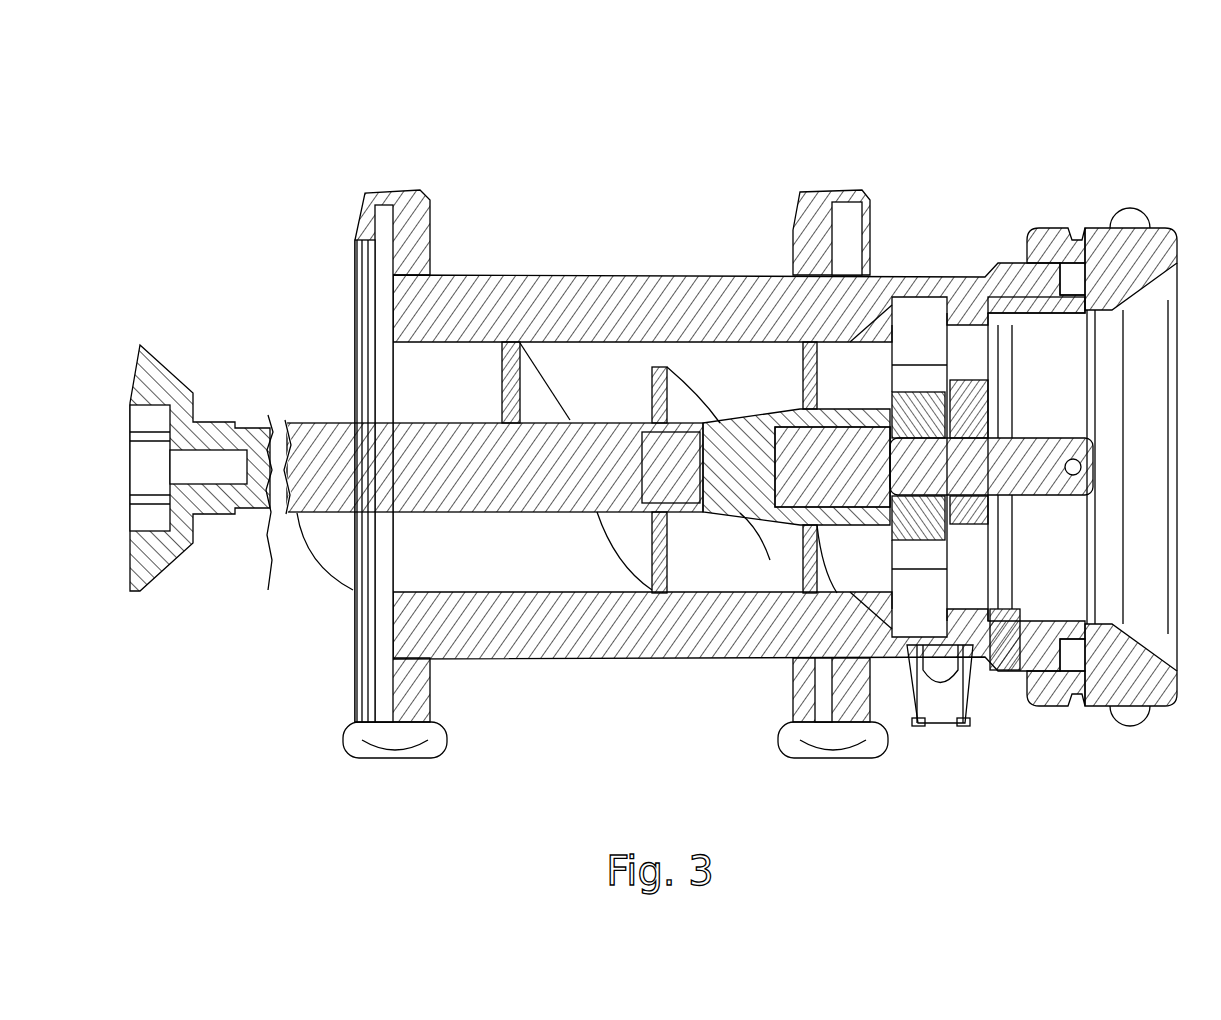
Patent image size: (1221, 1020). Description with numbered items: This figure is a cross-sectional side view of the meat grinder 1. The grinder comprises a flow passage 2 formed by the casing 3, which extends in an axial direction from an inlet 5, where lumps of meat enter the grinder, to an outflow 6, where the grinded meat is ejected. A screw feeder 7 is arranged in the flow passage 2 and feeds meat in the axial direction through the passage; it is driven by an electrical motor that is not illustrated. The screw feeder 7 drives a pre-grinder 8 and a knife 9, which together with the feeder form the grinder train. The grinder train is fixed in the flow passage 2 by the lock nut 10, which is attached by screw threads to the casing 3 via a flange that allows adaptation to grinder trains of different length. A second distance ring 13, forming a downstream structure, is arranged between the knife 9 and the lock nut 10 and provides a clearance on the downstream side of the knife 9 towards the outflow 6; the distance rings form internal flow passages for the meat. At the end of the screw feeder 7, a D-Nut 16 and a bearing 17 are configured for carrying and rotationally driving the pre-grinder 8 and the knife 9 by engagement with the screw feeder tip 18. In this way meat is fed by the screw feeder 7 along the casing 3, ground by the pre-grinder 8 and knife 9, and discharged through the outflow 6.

The dispensing device 1 is at (306, 136).
The flow passage 2 is at (603, 575).
The casing 3 is at (517, 643).
The inlet 5 is at (350, 568).
The outflow 6 is at (1175, 567).
The screw feeder 7 is at (592, 478).
The pre-grinder 8 is at (912, 632).
The knife 9 is at (967, 372).
The lock nut 10 is at (1133, 690).
The second distance ring 13 is at (1056, 308).
The D-Nut 16 is at (893, 367).
The bearing 17 is at (889, 405).
The screw feeder tip 18 is at (1035, 498).